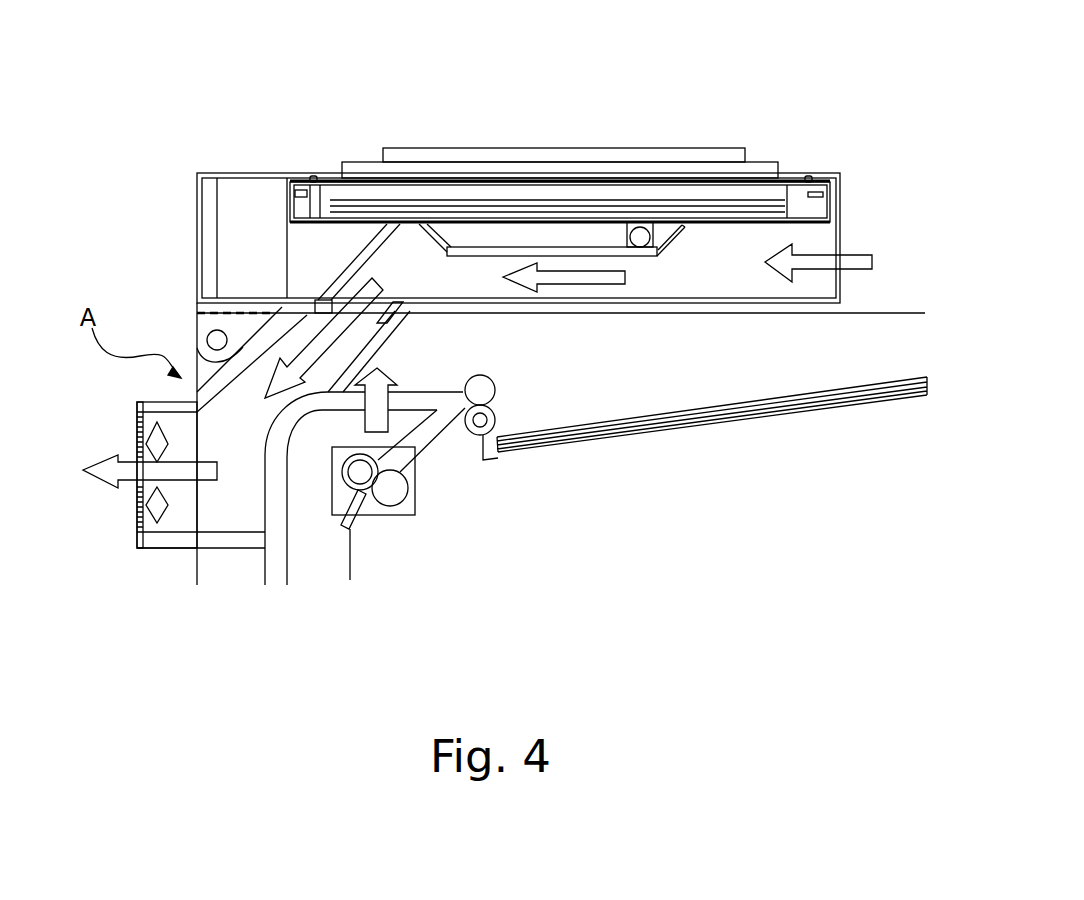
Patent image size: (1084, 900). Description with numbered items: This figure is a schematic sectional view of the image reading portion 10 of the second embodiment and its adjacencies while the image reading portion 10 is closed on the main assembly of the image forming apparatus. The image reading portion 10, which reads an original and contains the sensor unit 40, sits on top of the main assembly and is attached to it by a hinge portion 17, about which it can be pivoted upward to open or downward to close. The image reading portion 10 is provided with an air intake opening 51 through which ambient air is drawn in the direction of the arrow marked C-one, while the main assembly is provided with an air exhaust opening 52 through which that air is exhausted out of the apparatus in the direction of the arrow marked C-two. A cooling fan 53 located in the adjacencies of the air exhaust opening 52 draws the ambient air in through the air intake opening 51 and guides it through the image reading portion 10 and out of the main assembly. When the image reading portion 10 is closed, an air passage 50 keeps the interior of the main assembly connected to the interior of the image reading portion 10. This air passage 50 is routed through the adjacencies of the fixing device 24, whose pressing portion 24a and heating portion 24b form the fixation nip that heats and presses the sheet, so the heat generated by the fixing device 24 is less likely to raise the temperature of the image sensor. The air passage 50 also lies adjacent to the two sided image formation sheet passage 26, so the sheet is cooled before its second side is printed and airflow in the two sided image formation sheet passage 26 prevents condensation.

The image reading portion 10 is at (508, 126).
The sensor unit 40 is at (363, 200).
The hinge portion 17 is at (210, 335).
The two sided image formation sheet passage 26 is at (272, 478).
The fixing device 24 is at (396, 524).
The pressing portion 24a is at (348, 475).
The heating portion 24b is at (400, 490).
The air passage 50 is at (672, 287).
The air intake opening 51 is at (873, 278).
The air exhaust opening 52 is at (137, 505).
The cooling fan 53 is at (172, 525).